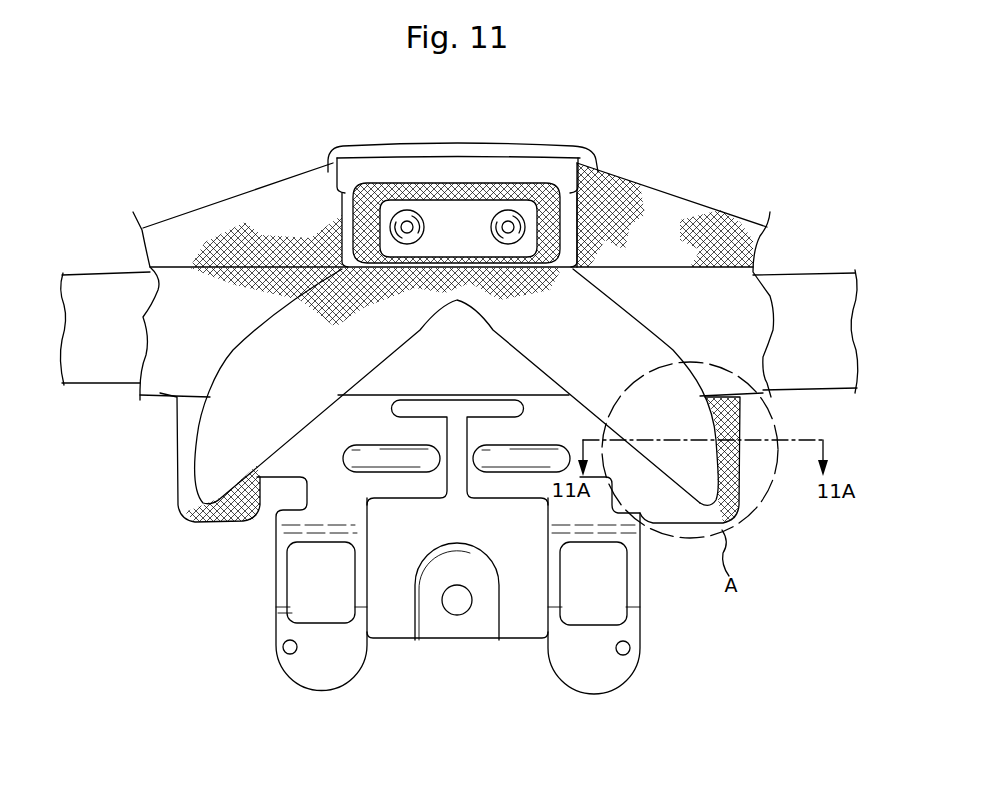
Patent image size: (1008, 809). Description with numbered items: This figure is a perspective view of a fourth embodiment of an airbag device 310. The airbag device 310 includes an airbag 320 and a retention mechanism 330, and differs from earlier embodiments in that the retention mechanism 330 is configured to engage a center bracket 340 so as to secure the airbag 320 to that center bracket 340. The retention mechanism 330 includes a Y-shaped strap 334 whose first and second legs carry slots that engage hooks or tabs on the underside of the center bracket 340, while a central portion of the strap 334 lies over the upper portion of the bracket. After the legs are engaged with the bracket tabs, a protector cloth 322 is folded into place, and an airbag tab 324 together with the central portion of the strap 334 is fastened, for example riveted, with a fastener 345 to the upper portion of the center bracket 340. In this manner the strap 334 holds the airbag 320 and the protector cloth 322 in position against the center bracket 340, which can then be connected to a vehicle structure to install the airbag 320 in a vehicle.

The airbag device 310 is at (442, 382).
The airbag 320 is at (90, 290).
The protector cloth 322 is at (217, 210).
The airbag tab 324 is at (553, 158).
The retention mechanism 330 is at (679, 337).
The strap 334 is at (215, 467).
The center bracket 340 is at (278, 558).
The fastener 345 is at (407, 225).